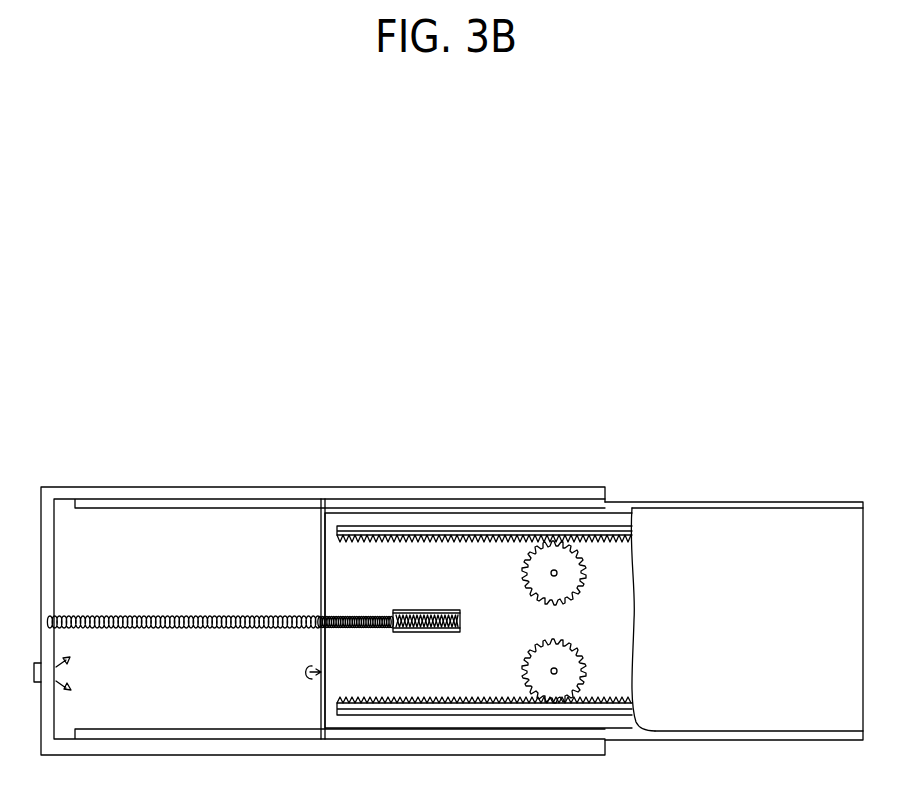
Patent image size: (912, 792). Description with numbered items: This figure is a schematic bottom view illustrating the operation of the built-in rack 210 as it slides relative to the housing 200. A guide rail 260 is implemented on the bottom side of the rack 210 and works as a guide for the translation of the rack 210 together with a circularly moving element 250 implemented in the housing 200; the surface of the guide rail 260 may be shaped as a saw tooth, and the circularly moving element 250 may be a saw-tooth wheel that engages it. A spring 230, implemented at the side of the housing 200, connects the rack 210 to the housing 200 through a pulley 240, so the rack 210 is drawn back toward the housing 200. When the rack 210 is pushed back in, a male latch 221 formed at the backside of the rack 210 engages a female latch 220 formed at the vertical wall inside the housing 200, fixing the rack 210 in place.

The housing 200 is at (195, 498).
The rack 210 is at (711, 522).
The female latch 220 is at (68, 687).
The male latch 221 is at (303, 677).
The spring 230 is at (193, 617).
The pulley 240 is at (443, 629).
The circularly moving element 250 is at (566, 587).
The guide rail 260 is at (483, 530).